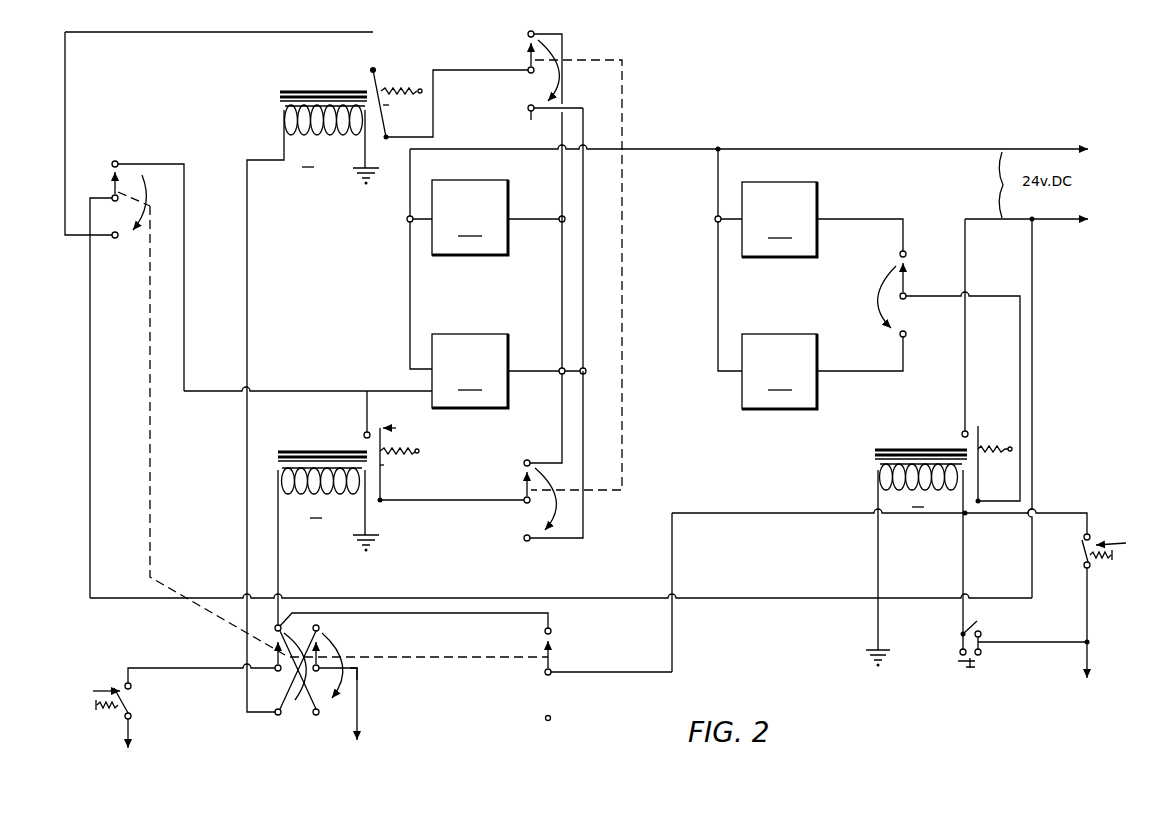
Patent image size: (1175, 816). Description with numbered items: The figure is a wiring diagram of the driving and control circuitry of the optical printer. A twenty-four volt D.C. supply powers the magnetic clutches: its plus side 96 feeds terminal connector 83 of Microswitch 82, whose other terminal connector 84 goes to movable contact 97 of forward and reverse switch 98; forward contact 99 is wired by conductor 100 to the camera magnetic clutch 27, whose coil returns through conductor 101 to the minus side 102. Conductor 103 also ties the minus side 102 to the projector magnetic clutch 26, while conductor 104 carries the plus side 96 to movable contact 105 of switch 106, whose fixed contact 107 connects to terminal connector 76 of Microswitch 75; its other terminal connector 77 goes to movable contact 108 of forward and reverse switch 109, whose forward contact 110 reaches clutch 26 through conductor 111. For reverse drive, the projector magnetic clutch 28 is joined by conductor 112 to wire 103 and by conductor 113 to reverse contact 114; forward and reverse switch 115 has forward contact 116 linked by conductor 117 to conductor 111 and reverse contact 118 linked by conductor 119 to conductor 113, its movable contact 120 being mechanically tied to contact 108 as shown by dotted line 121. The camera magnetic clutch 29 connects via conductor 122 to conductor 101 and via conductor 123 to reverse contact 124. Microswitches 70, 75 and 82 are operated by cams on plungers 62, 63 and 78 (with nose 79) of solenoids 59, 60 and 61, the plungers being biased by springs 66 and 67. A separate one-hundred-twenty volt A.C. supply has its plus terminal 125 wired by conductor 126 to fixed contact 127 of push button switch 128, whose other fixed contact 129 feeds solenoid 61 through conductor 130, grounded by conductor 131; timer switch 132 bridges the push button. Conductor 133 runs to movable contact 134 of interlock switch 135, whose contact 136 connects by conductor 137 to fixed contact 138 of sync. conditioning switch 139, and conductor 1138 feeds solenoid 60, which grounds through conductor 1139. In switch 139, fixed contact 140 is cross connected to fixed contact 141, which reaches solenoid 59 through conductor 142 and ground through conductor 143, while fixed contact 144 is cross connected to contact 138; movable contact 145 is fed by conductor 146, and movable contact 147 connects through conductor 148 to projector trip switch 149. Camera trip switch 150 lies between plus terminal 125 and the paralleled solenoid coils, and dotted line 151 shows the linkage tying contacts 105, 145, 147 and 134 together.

The projector magnetic clutch 26 is at (511, 181).
The camera magnetic clutch 27 is at (819, 184).
The projector magnetic clutch 28 is at (511, 334).
The camera magnetic clutch 29 is at (819, 336).
The solenoid (A) 59 is at (282, 104).
The solenoid (B) 60 is at (275, 462).
The solenoid (C) 61 is at (872, 464).
The latching plunger 62 is at (386, 105).
The latching plunger 63 is at (385, 465).
The spring means 66 is at (401, 82).
The spring means 67 is at (395, 452).
The Microswitch 70 is at (380, 71).
The Microswitch 75 is at (383, 428).
The terminal connector 76 is at (341, 391).
The terminal connector 77 is at (422, 500).
The core plunger 78 is at (981, 460).
The rectangular nose 79 is at (981, 426).
The Microswitch 82 is at (972, 420).
The terminal connector 83 is at (967, 362).
The terminal connector 84 is at (1020, 377).
The plus side 96 is at (1072, 225).
The movable contact 97 is at (912, 279).
The forward and reverse switch 98 is at (909, 300).
The fixed forward contact 99 is at (906, 254).
The conductor 100 is at (869, 219).
The conductor 101 is at (708, 178).
The minus side 102 is at (1078, 150).
The conductor 103 is at (483, 148).
The conductor 104 is at (1034, 401).
The movable contact 105 is at (219, 315).
The single-pole, double-throw switch 106 is at (128, 154).
The fixed contact 107 is at (143, 256).
The movable contact 108 is at (521, 487).
The forward and reverse switch 109 is at (518, 511).
The fixed forward contact 110 is at (527, 458).
The conductor 111 is at (560, 270).
The conductor 112 is at (408, 264).
The conductor 113 is at (586, 416).
The fixed reverse contact 114 is at (527, 551).
The forward and reverse switch 115 is at (520, 80).
The fixed forward contact 116 is at (534, 31).
The conductor 117 is at (558, 192).
The fixed reverse contact 118 is at (546, 119).
The conductor 119 is at (586, 262).
The movable contact 120 is at (529, 62).
The dotted line 121 is at (628, 130).
The conductor 122 is at (715, 280).
The conductor 123 is at (866, 378).
The fixed reverse contact 124 is at (914, 344).
The plus terminal 125 is at (1092, 649).
The conductor 126 is at (1036, 645).
The fixed contact 127 is at (980, 658).
The push button switch 128 is at (964, 673).
The fixed contact 129 is at (960, 656).
The conductor 130 is at (960, 562).
The conductor 131 is at (877, 548).
The timer switch 132 is at (985, 631).
The conductor 133 is at (756, 511).
The movable contact 134 is at (553, 649).
The interlock switch 135 is at (543, 666).
The contact 136 is at (553, 630).
The conductor 137 is at (472, 614).
The fixed contact 138 is at (280, 660).
The sync. conditioning switch 139 is at (369, 675).
The fixed contact 140 is at (318, 628).
The fixed contact 141 is at (277, 710).
The conductor 142 is at (248, 344).
The conductor 143 is at (366, 160).
The fixed contact 144 is at (320, 712).
The movable contact 145 is at (331, 646).
The conductor 146 is at (359, 699).
The movable contact 147 is at (272, 645).
The conductor 148 is at (182, 670).
The projector trip switch 149 is at (138, 703).
The camera trip switch 150 is at (1080, 554).
The dotted line 151 is at (152, 474).
The conductor 1138 is at (279, 582).
The conductor 1139 is at (366, 518).